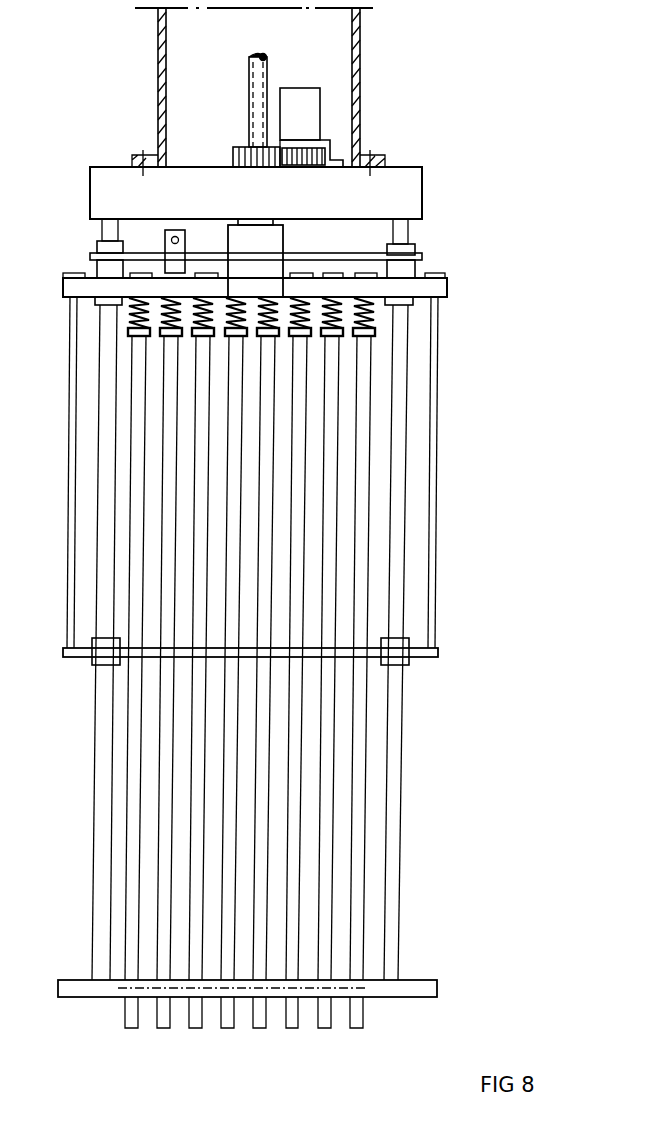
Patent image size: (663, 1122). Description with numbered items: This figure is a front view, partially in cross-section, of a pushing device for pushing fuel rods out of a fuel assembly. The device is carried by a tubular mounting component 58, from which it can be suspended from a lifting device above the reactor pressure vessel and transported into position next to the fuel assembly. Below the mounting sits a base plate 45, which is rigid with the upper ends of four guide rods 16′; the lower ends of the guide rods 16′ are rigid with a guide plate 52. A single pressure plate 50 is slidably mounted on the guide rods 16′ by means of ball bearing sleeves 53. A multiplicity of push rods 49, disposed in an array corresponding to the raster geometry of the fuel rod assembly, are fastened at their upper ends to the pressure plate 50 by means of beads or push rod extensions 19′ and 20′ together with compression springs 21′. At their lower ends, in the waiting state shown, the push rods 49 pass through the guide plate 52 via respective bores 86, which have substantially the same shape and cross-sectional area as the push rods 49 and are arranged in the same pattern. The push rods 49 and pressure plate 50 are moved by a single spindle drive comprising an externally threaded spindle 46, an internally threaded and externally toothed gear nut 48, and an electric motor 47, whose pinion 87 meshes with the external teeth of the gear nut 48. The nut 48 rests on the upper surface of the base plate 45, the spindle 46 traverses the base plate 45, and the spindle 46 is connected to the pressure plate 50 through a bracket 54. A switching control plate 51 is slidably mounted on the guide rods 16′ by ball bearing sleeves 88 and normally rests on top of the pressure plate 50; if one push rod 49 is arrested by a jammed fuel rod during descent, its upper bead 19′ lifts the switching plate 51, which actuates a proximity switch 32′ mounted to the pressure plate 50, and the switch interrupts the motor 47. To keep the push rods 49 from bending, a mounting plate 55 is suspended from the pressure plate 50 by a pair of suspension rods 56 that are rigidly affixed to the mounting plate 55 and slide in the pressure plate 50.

The base plate 45 is at (103, 183).
The externally threaded spindle 46 is at (253, 70).
The electric motor 47 is at (312, 96).
The gear nut 48 is at (243, 148).
The pinion gear 87 is at (323, 156).
The tubular mounting component 58 is at (356, 97).
The ball bearing sleeves 88 is at (408, 248).
The switching control plate 51 is at (415, 257).
The ball bearing sleeves 53 is at (102, 270).
The proximity switch 32′ is at (168, 240).
The bracket 54 is at (275, 240).
The upper bead 19′ is at (360, 273).
The pressure plate 50 is at (70, 287).
The compression springs 21′ is at (128, 320).
The bead or push rod extension 20′ is at (372, 338).
The suspension rods 56 is at (68, 519).
The mounting plate 55 is at (63, 652).
The guide rods 16′ is at (97, 811).
The guide plate 52 is at (437, 988).
The bores 86 is at (163, 990).
The push rods 49 is at (158, 1012).